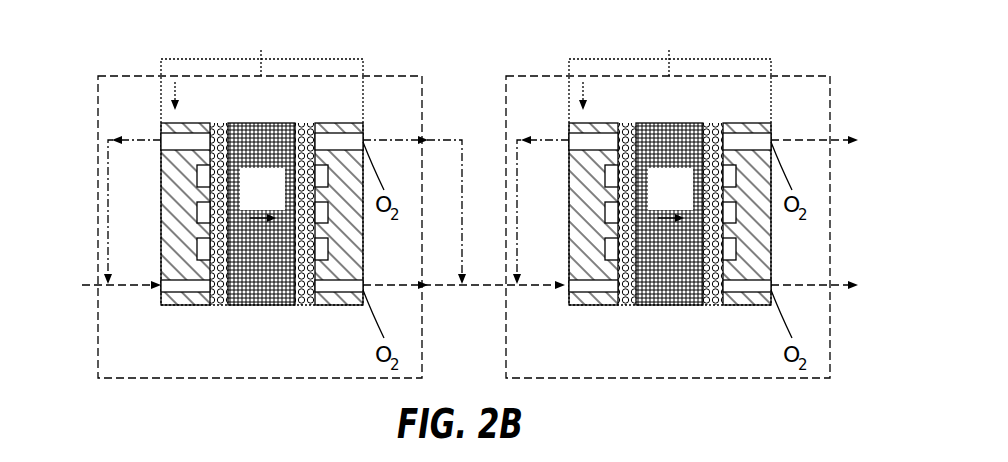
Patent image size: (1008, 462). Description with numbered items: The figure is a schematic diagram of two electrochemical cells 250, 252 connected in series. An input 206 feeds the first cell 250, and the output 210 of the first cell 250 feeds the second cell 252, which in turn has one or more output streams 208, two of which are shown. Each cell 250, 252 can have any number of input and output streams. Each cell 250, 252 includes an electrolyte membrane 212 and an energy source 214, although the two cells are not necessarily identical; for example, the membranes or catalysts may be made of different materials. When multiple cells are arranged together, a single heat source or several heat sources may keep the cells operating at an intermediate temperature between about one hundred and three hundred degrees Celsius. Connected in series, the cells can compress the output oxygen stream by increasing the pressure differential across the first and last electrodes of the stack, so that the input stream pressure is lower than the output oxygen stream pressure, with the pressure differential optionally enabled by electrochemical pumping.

The input 206 is at (88, 287).
The output streams 208 is at (832, 140).
The output 210 is at (480, 287).
The electrolyte membrane 212 is at (263, 132).
The energy source 214 is at (160, 73).
The first cell 250 is at (385, 76).
The second cell 252 is at (805, 76).